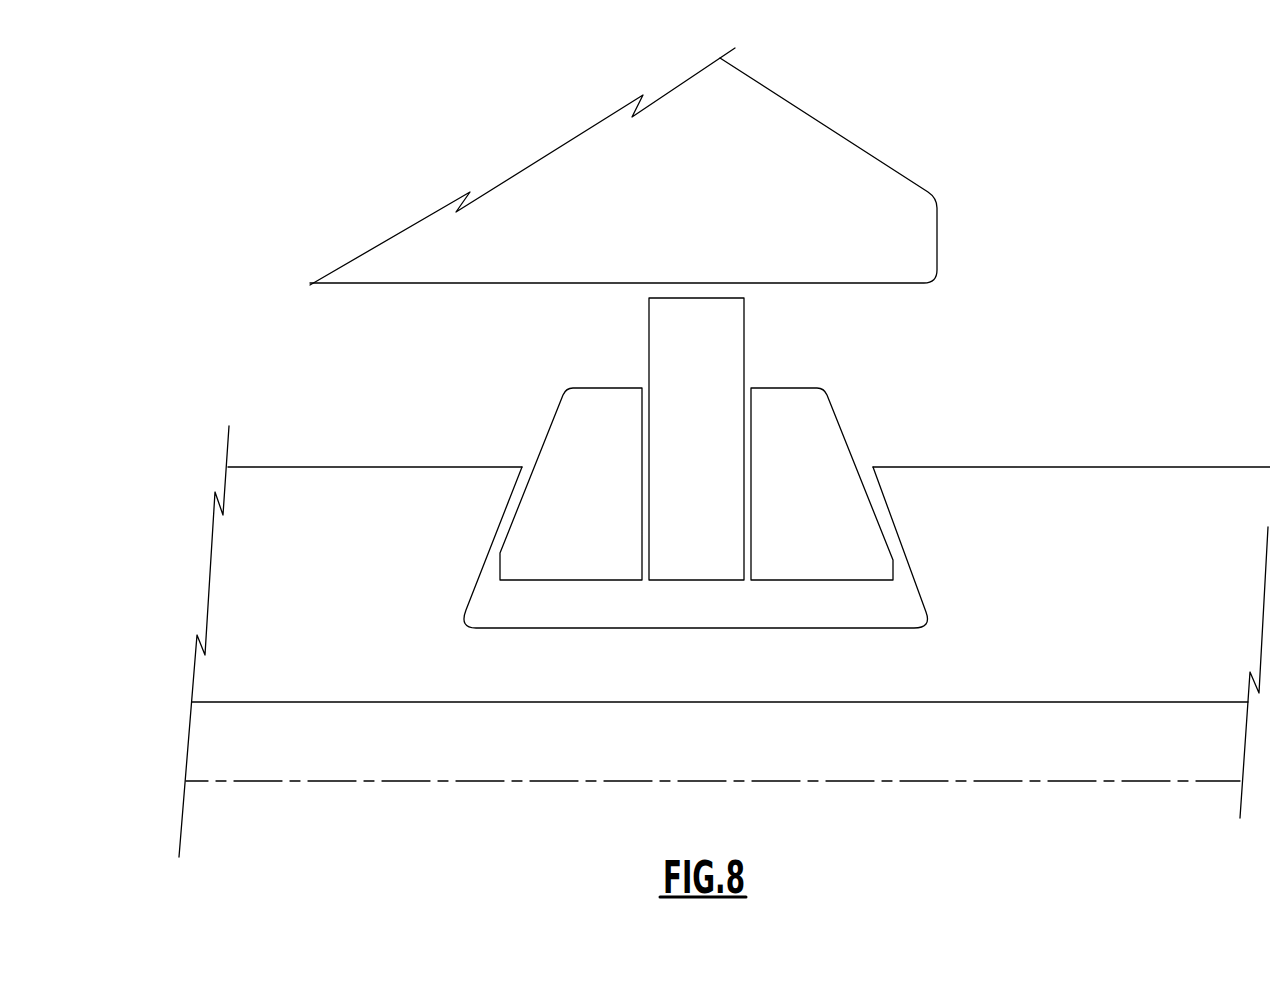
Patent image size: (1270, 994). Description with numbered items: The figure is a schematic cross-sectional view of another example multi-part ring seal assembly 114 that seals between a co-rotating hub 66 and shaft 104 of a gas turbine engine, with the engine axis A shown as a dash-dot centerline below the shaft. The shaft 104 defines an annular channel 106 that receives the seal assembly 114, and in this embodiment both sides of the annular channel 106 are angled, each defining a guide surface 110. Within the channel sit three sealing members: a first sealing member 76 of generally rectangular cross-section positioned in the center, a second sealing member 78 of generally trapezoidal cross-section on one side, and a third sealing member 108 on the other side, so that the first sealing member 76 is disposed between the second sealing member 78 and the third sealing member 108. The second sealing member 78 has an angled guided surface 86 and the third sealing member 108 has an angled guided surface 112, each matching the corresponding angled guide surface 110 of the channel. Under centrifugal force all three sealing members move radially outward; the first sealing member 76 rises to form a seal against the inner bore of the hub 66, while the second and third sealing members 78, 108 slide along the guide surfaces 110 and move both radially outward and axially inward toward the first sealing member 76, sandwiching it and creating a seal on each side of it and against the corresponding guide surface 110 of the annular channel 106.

The hub 66 is at (822, 168).
The first sealing member 76 is at (724, 343).
The second sealing member 78 is at (572, 443).
The third sealing member 108 is at (820, 443).
The annular channel 106 is at (696, 607).
The shaft 104 is at (1096, 512).
The second guide surface 110 is at (691, 577).
The guided surface 86 is at (477, 504).
The angled guided surface 112 is at (933, 518).
The multi-part ring seal assembly 114 is at (1095, 246).
The engine axis A is at (348, 782).